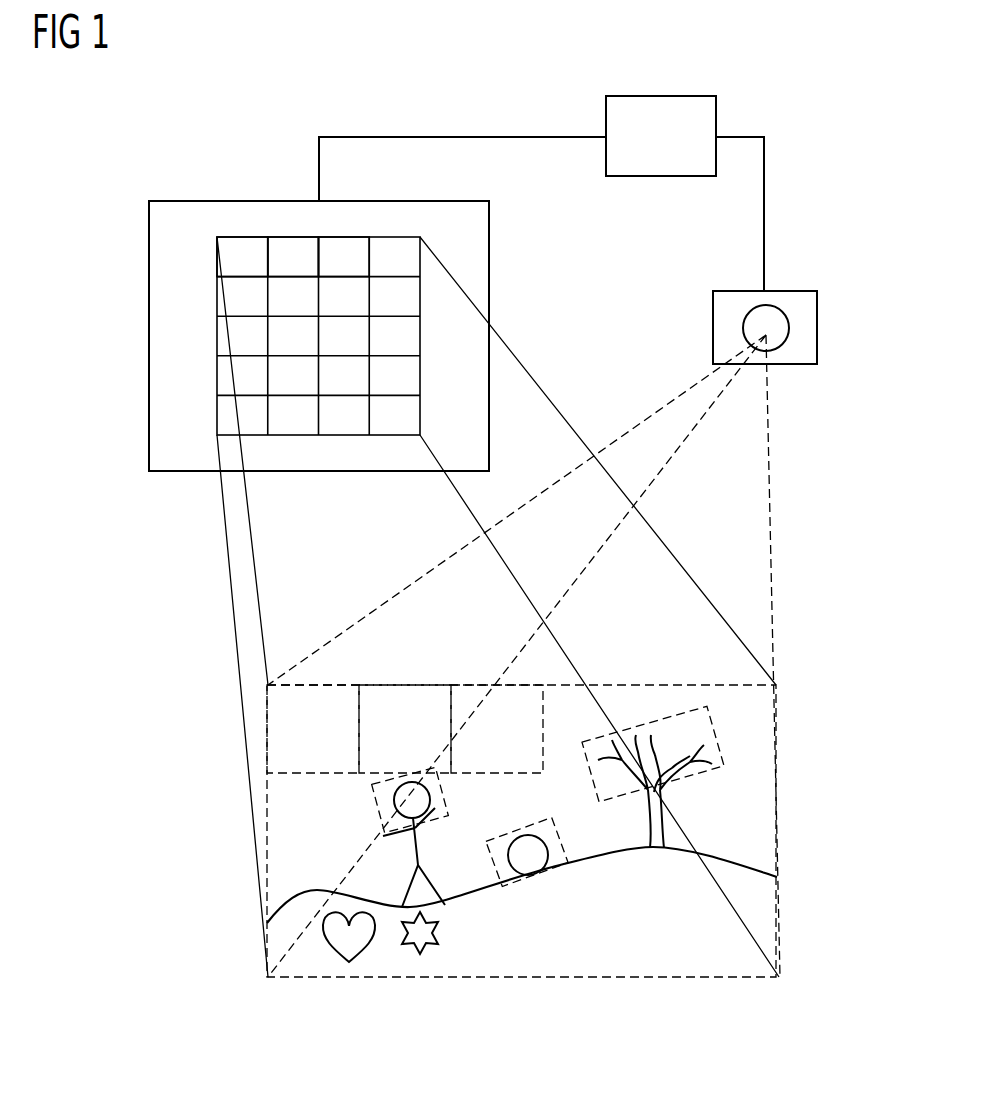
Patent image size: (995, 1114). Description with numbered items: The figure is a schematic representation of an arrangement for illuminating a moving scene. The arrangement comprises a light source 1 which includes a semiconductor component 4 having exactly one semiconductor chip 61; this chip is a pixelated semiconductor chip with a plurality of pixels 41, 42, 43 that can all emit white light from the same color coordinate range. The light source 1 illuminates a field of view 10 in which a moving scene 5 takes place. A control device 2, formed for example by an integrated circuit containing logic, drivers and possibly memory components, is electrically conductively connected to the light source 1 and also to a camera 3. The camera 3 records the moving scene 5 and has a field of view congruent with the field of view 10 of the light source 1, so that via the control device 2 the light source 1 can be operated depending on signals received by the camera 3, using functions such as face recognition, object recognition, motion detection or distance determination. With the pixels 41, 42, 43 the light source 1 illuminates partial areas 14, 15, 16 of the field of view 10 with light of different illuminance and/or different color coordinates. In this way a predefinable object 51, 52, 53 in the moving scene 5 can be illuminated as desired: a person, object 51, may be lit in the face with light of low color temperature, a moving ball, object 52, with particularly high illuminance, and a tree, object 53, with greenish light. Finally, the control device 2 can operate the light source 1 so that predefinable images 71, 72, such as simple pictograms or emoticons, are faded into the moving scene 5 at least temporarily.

The light source 1 is at (149, 283).
The control device 2 is at (658, 96).
The camera 3 is at (817, 333).
The semiconductor component 4 is at (243, 336).
The semiconductor chip 61 is at (217, 340).
The pixel 41 is at (243, 245).
The pixel 42 is at (294, 250).
The pixel 43 is at (346, 250).
The field of view 10 is at (728, 684).
The moving scene 5 is at (746, 714).
The partial area 14 is at (337, 691).
The partial area 15 is at (417, 699).
The partial area 16 is at (471, 693).
The object 51 is at (376, 797).
The object 52 is at (507, 837).
The object 53 is at (645, 722).
The image 71 is at (351, 950).
The image 72 is at (422, 953).